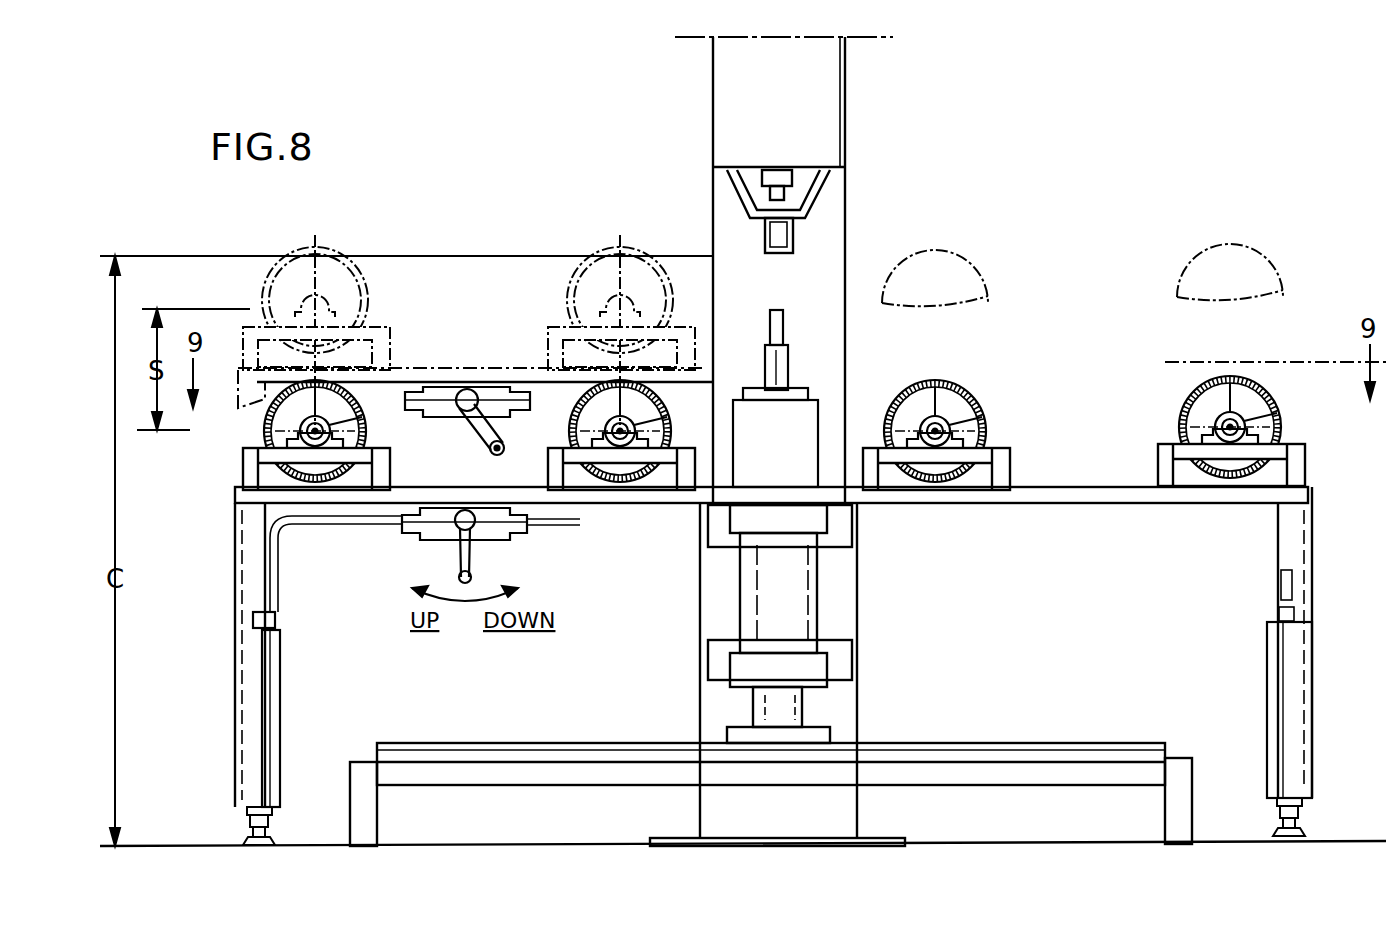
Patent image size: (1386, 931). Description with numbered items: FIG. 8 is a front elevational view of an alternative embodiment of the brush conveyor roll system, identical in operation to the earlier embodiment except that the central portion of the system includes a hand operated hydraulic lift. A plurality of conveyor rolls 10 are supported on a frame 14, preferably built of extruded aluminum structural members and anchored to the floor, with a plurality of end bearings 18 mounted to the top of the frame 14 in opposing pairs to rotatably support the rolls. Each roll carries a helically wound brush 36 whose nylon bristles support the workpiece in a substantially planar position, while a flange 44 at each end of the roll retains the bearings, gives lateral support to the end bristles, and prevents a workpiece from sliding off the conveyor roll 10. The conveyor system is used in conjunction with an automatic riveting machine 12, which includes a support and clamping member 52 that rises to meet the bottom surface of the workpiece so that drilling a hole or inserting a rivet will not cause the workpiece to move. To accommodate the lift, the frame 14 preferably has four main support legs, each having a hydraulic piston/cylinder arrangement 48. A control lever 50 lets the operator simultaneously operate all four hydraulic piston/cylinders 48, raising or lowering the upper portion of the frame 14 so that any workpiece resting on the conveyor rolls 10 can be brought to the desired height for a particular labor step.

The conveyor roll 10 is at (372, 316).
The automatic riveting machine 12 is at (725, 120).
The frame 14 is at (445, 368).
The end bearing 18 is at (332, 424).
The brush 36 is at (952, 379).
The flange 44 is at (905, 410).
The hydraulic piston/cylinder arrangement 48 is at (280, 665).
The control lever 50 is at (490, 445).
The support and clamping member 52 is at (790, 353).